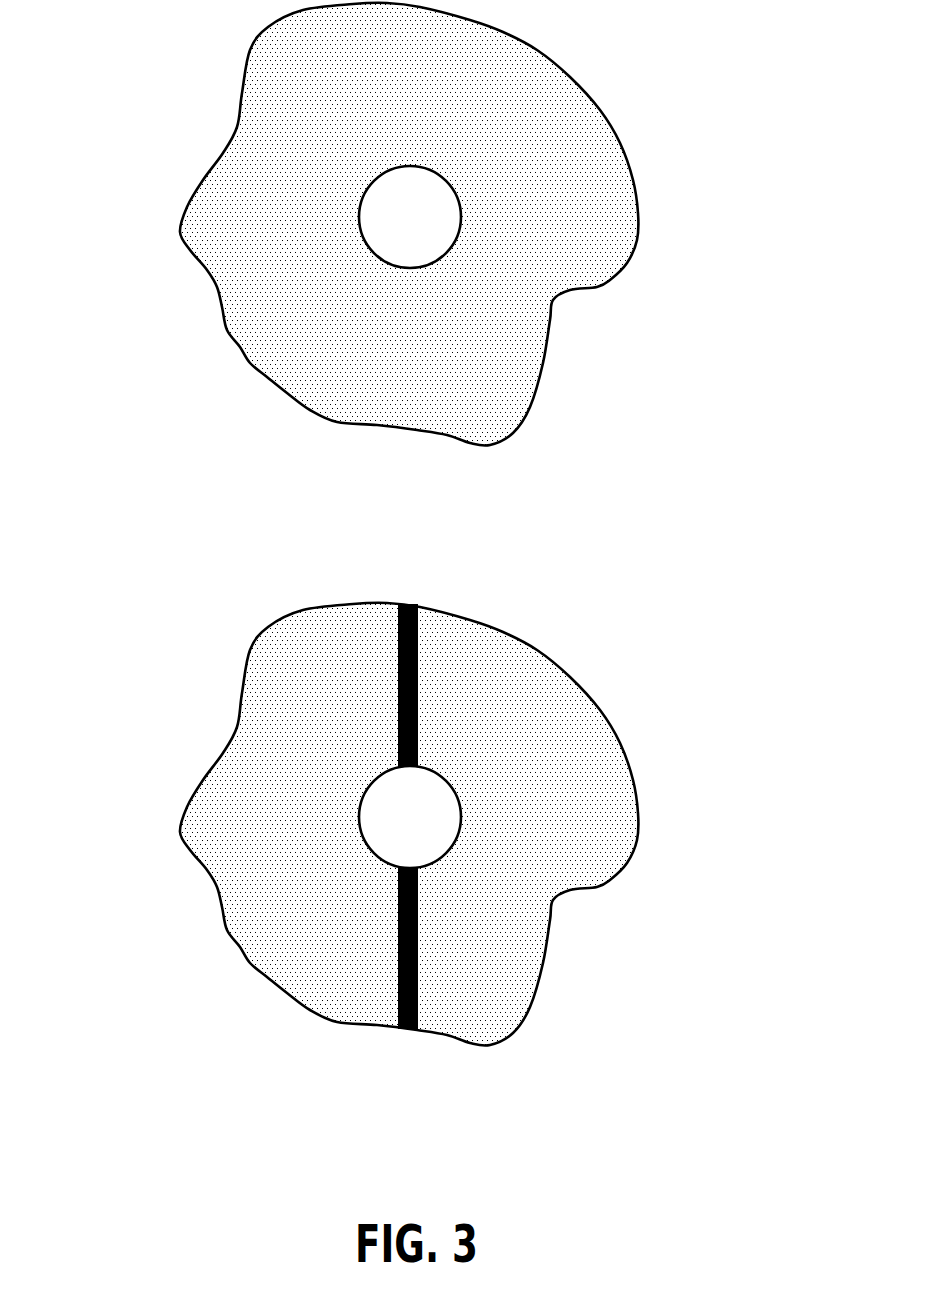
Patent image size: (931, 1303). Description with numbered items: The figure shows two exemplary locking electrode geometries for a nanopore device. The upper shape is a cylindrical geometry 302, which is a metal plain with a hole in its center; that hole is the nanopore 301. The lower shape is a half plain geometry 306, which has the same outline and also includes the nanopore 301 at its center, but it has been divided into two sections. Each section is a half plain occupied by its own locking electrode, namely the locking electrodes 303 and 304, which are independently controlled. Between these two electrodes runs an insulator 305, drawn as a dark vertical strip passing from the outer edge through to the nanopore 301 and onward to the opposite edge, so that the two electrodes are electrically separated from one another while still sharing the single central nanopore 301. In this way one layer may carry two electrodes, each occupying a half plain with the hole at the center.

The nanopore 301 is at (414, 818).
The cylindrical geometry 302 is at (282, 132).
The locking electrode 303 is at (245, 810).
The locking electrode 304 is at (553, 832).
The insulator 305 is at (418, 638).
The half plain geometry 306 is at (617, 732).